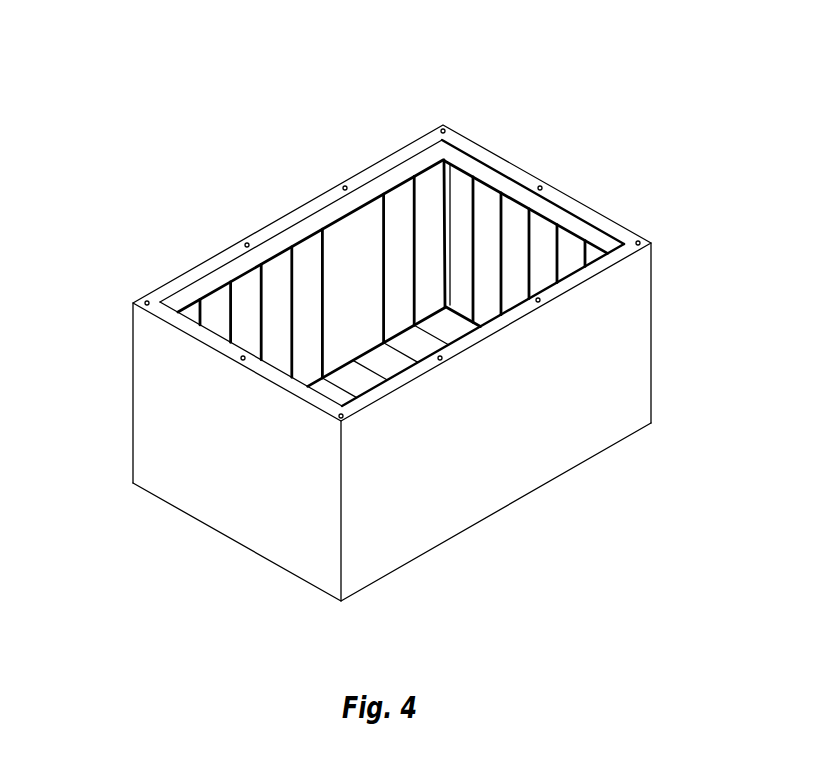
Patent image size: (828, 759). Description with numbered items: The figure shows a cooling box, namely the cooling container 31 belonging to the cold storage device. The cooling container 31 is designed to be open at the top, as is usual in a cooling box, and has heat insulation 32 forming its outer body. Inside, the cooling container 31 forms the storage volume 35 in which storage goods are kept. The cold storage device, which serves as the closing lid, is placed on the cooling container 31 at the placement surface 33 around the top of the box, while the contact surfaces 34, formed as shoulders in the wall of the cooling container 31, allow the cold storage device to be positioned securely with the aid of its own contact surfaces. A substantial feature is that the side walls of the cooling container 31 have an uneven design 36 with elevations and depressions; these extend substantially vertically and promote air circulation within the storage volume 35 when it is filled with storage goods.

The cooling container 31 is at (374, 318).
The heat insulation 32 is at (455, 510).
The placement surface 33 is at (594, 216).
The contact surfaces 34 is at (509, 185).
The storage volume 35 is at (353, 212).
The uneven design 36 is at (383, 235).